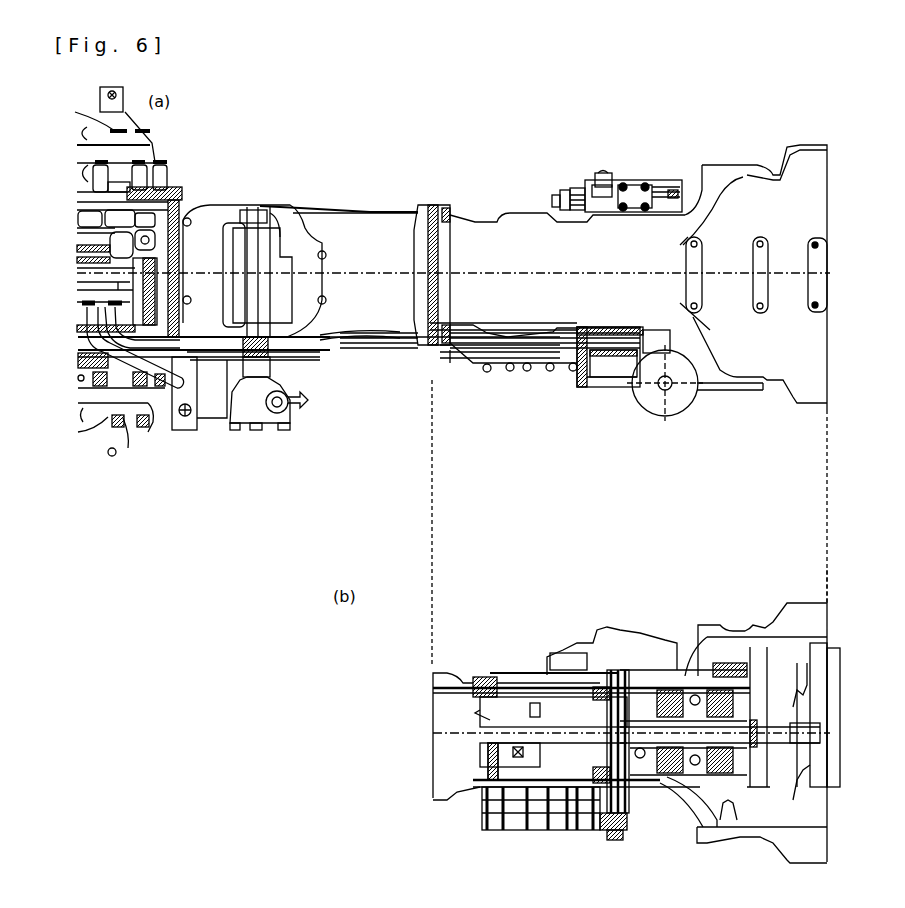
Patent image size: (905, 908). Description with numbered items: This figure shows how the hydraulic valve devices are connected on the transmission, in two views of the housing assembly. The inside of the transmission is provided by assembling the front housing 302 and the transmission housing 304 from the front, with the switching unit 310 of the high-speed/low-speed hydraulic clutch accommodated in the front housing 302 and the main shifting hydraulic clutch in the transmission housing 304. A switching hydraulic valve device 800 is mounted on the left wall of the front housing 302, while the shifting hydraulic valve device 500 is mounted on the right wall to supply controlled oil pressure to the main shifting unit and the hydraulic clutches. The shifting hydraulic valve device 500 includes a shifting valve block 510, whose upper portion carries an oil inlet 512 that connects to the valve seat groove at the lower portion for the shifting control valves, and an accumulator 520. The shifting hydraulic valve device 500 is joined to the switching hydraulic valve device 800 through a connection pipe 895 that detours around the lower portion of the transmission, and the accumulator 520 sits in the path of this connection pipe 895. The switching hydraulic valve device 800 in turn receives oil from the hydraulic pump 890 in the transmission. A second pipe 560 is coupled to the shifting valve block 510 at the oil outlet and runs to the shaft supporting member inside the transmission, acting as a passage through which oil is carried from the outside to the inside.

The front housing 302 is at (513, 213).
The transmission housing 304 is at (378, 212).
The switching unit 310 is at (735, 800).
The shifting hydraulic valve device 500 is at (512, 388).
The shifting valve block 510 is at (583, 830).
The oil inlet 512 is at (587, 387).
The accumulator 520 is at (677, 417).
The second pipe 560 is at (480, 763).
The switching hydraulic valve device 800 is at (603, 173).
The hydraulic pump 890 is at (747, 637).
The connection pipe 895 is at (730, 390).